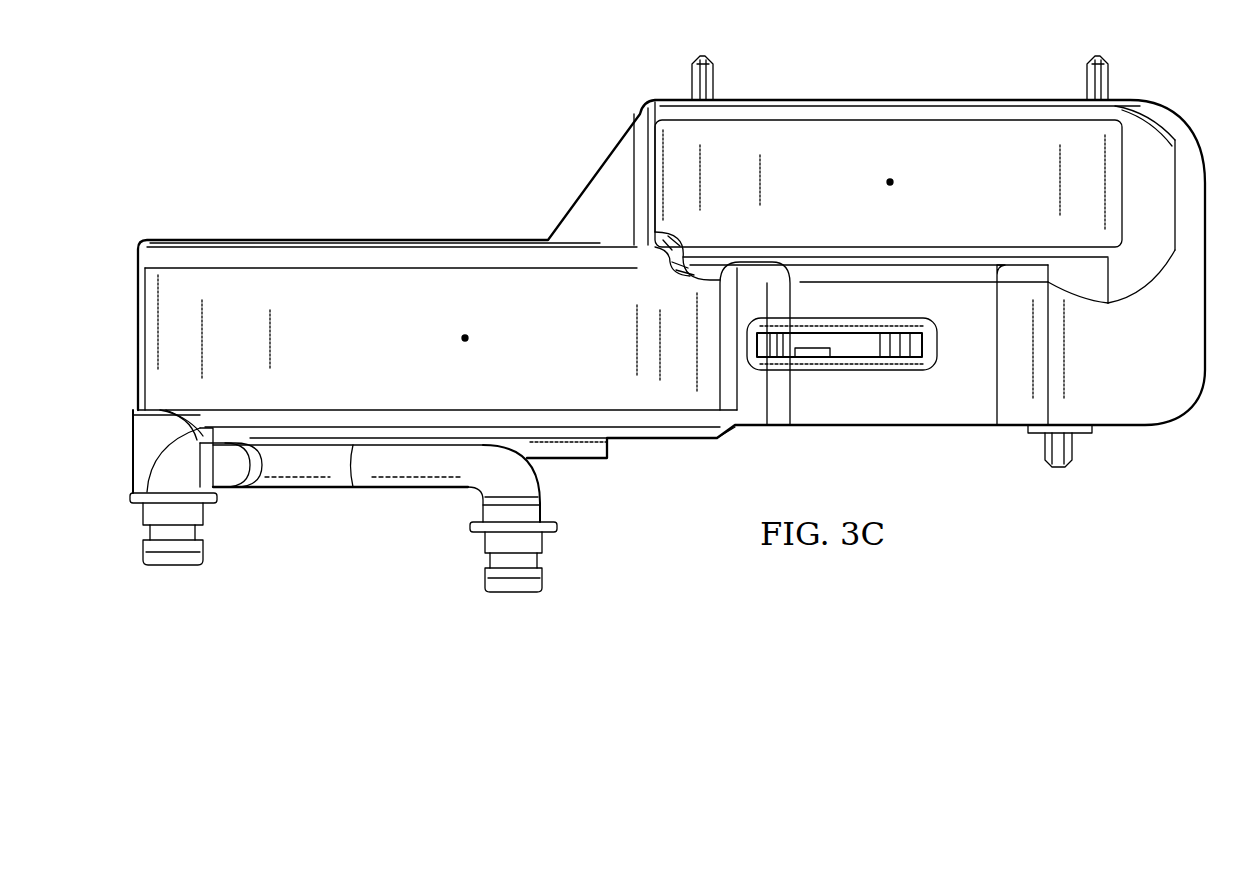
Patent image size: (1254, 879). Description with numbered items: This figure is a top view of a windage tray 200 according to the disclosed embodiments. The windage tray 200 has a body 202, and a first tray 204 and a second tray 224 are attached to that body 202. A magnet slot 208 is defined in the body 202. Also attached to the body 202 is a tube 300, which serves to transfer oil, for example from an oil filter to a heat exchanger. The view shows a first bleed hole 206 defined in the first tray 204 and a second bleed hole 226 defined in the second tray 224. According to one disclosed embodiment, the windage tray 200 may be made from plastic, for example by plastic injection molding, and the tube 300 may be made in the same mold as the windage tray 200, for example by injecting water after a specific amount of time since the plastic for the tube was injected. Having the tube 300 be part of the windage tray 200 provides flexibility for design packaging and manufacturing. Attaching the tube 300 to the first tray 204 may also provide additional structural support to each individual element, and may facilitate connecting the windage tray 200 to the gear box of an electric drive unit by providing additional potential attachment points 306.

The windage tray 200 is at (543, 101).
The body 202 is at (590, 221).
The first tray 204 is at (190, 283).
The first bleed hole 206 is at (470, 339).
The magnet slot 208 is at (848, 371).
The second tray 224 is at (828, 132).
The second bleed hole 226 is at (895, 184).
The tube 300 is at (335, 478).
The attachment points 306 is at (178, 405).